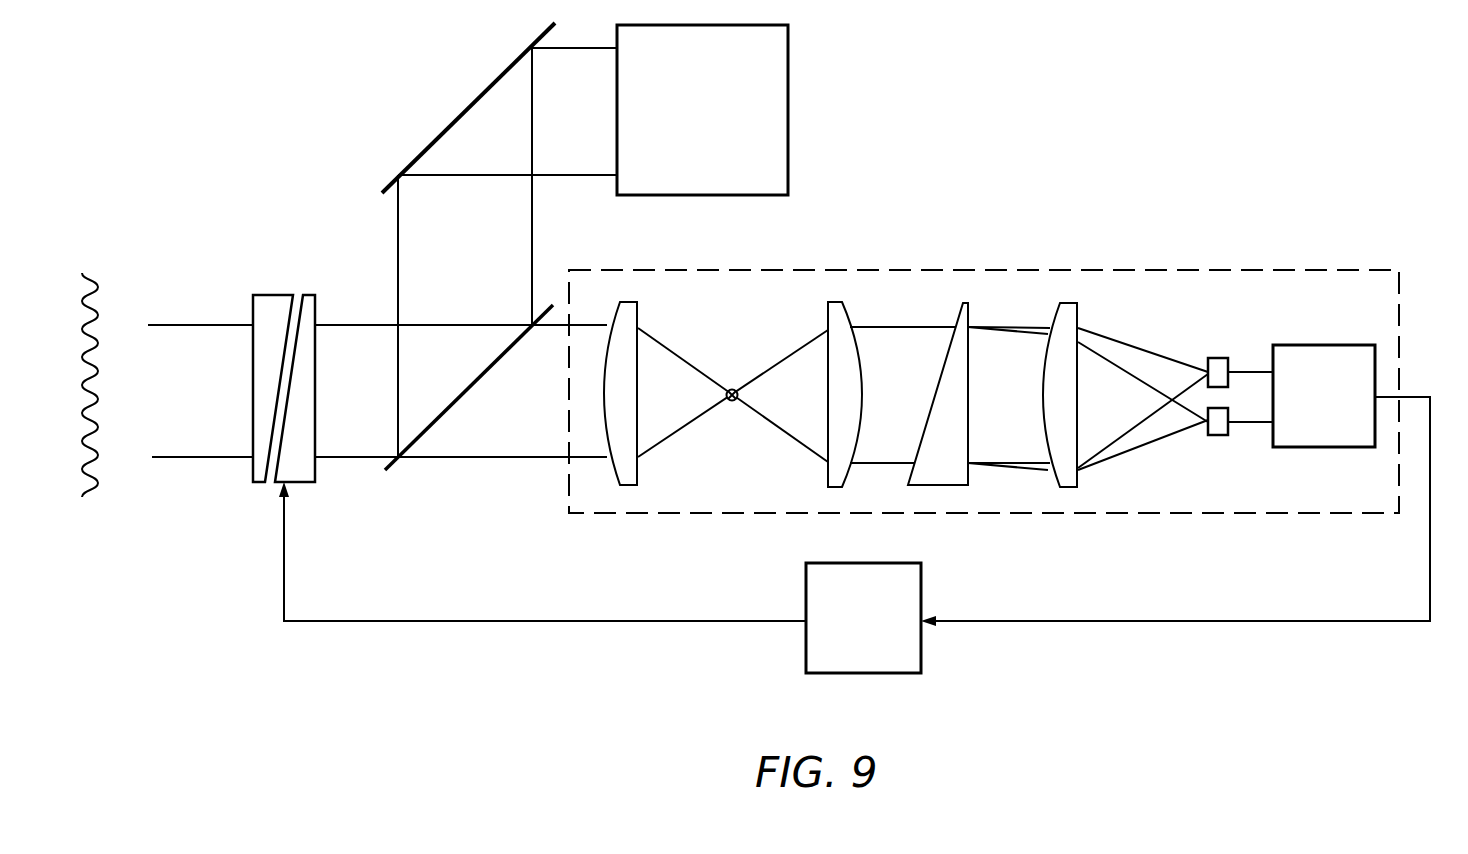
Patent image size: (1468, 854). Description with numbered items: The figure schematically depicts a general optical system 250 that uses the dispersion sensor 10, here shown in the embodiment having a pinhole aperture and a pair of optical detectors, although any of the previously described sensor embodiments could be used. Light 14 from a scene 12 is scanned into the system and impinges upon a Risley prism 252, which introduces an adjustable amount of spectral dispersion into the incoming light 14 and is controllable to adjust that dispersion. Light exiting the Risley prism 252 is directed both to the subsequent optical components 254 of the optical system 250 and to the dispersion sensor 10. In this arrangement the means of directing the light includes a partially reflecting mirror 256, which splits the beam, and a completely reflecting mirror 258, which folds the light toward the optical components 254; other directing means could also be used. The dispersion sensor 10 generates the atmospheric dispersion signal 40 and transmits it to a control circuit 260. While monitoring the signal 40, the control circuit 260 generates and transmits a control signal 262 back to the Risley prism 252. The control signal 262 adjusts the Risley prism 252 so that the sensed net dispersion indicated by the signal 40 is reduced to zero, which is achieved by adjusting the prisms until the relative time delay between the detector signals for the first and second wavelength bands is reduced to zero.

The dispersion sensor 10 is at (1248, 324).
The scene 12 is at (85, 228).
The light 14 is at (198, 315).
The atmospheric dispersion signal 40 is at (1412, 395).
The optical system 250 is at (1034, 145).
The Risley prism 252 is at (279, 293).
The subsequent optical components 254 is at (789, 67).
The partially reflecting mirror 256 is at (452, 408).
The completely reflecting mirror 258 is at (498, 76).
The control circuit 260 is at (922, 590).
The control signal 262 is at (523, 620).